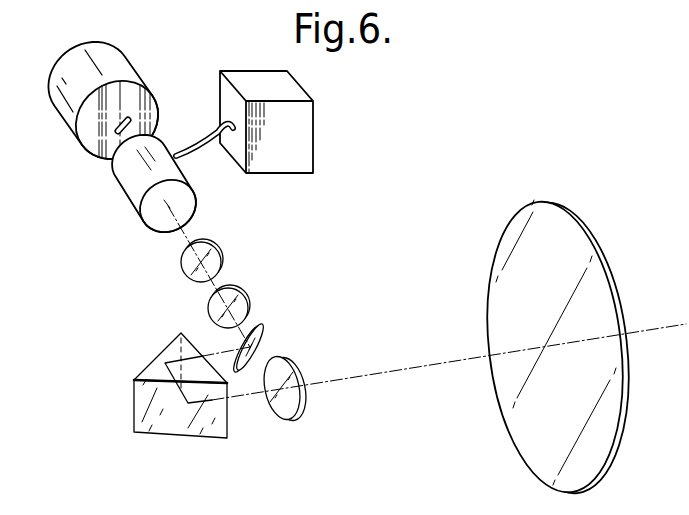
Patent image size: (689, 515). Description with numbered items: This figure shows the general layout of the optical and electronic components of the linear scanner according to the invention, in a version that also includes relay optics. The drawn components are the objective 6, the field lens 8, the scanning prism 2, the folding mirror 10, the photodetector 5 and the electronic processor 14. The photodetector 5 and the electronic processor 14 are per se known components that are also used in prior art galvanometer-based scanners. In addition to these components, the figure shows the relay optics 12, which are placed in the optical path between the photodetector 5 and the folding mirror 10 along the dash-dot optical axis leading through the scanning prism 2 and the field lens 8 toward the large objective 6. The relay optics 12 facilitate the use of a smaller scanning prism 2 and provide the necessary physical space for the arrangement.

The scanning prism 2 is at (162, 432).
The photodetector 5 is at (128, 172).
The objective 6 is at (598, 262).
The field lens 8 is at (290, 367).
The folding mirror 10 is at (262, 333).
The relay optics 12 is at (263, 312).
The electronic processor 14 is at (306, 140).